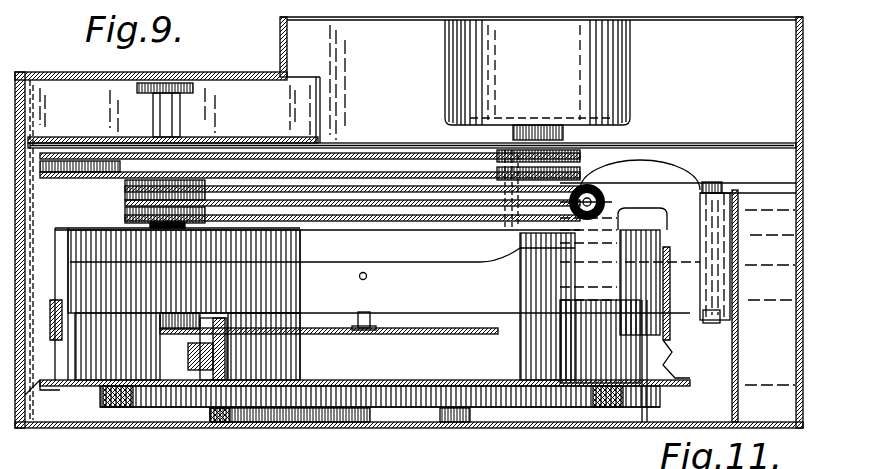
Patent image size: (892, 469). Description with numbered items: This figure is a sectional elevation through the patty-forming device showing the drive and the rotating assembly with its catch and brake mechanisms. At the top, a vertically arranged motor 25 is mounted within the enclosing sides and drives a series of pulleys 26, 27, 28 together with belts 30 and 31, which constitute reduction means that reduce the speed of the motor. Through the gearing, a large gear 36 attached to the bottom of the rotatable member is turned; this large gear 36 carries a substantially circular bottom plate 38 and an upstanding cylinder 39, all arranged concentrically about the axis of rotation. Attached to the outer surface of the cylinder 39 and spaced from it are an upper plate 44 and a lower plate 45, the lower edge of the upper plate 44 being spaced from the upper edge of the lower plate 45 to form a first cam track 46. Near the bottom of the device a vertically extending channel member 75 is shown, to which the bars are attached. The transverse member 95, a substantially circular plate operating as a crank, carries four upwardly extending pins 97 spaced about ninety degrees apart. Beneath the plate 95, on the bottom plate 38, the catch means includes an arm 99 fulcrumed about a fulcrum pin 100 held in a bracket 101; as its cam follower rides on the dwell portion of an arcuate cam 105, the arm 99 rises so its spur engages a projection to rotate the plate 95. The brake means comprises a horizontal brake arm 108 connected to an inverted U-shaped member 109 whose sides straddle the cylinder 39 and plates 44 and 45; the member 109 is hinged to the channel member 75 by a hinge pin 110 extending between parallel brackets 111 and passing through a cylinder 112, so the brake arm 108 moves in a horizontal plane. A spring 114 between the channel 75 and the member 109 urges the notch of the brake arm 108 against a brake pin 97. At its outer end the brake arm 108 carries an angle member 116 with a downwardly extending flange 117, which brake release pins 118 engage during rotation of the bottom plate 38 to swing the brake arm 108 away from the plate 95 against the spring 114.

The motor 25 is at (615, 75).
The pulley 26 is at (580, 153).
The pulley 27 is at (115, 193).
The pulley 28 is at (128, 218).
The belt 30 is at (387, 160).
The belt 31 is at (377, 193).
The large gear 36 is at (107, 390).
The bottom plate 38 is at (675, 385).
The cylinder 39 is at (342, 268).
The upper plate 44 is at (68, 230).
The lower plate 45 is at (42, 383).
The first cam track 46 is at (62, 368).
The channel member 75 is at (757, 190).
The transverse member 95 is at (418, 335).
The pin 97 is at (372, 307).
The arm 99 is at (200, 427).
The fulcrum pin 100 is at (193, 363).
The bracket 101 is at (293, 387).
The arcuate cam 105 is at (263, 427).
The brake arm 108 is at (423, 312).
The inverted U-shaped member 109 is at (685, 160).
The hinge pin 110 is at (712, 182).
The bracket 111 is at (738, 217).
The cylinder 112 is at (717, 263).
The spring 114 is at (598, 198).
The angle member 116 is at (287, 310).
The flange 117 is at (190, 367).
The brake release pin 118 is at (265, 353).